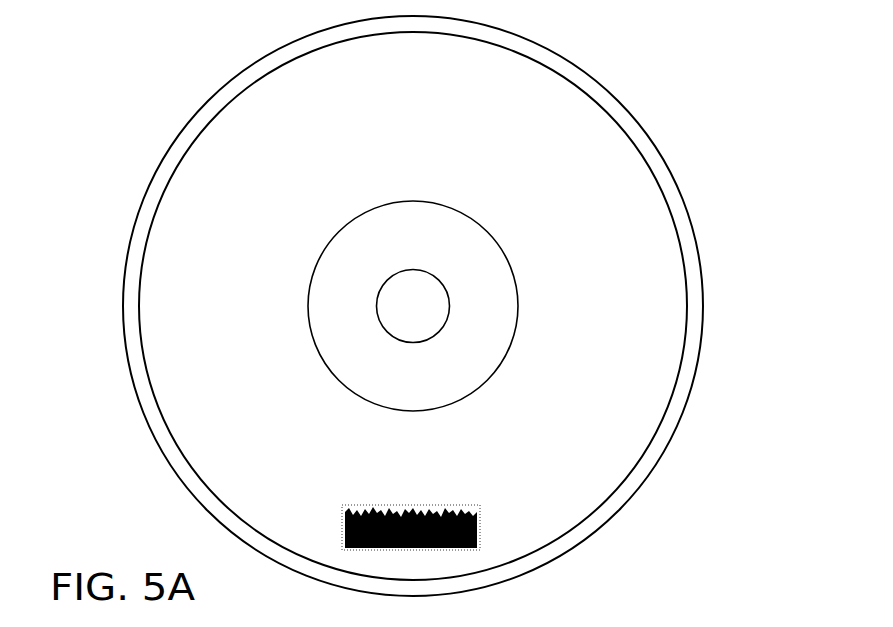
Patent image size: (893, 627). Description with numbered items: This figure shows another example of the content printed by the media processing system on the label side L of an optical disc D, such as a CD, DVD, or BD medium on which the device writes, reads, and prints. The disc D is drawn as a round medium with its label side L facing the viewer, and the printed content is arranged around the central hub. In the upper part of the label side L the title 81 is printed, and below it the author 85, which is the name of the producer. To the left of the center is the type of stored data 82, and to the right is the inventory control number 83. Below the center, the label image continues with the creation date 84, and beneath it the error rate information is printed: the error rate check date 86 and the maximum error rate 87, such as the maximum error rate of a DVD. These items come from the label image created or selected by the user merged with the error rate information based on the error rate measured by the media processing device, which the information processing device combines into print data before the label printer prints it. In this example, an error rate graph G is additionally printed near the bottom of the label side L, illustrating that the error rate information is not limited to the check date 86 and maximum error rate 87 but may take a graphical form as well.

The title 81 is at (497, 80).
The type of stored data 82 is at (177, 309).
The inventory control number 83 is at (668, 299).
The creation date 84 is at (238, 431).
The author 85 is at (312, 174).
The error rate check date 86 is at (238, 455).
The maximum error rate 87 is at (238, 479).
The disc D is at (640, 123).
The label side L is at (647, 190).
The error rate graph G is at (498, 530).